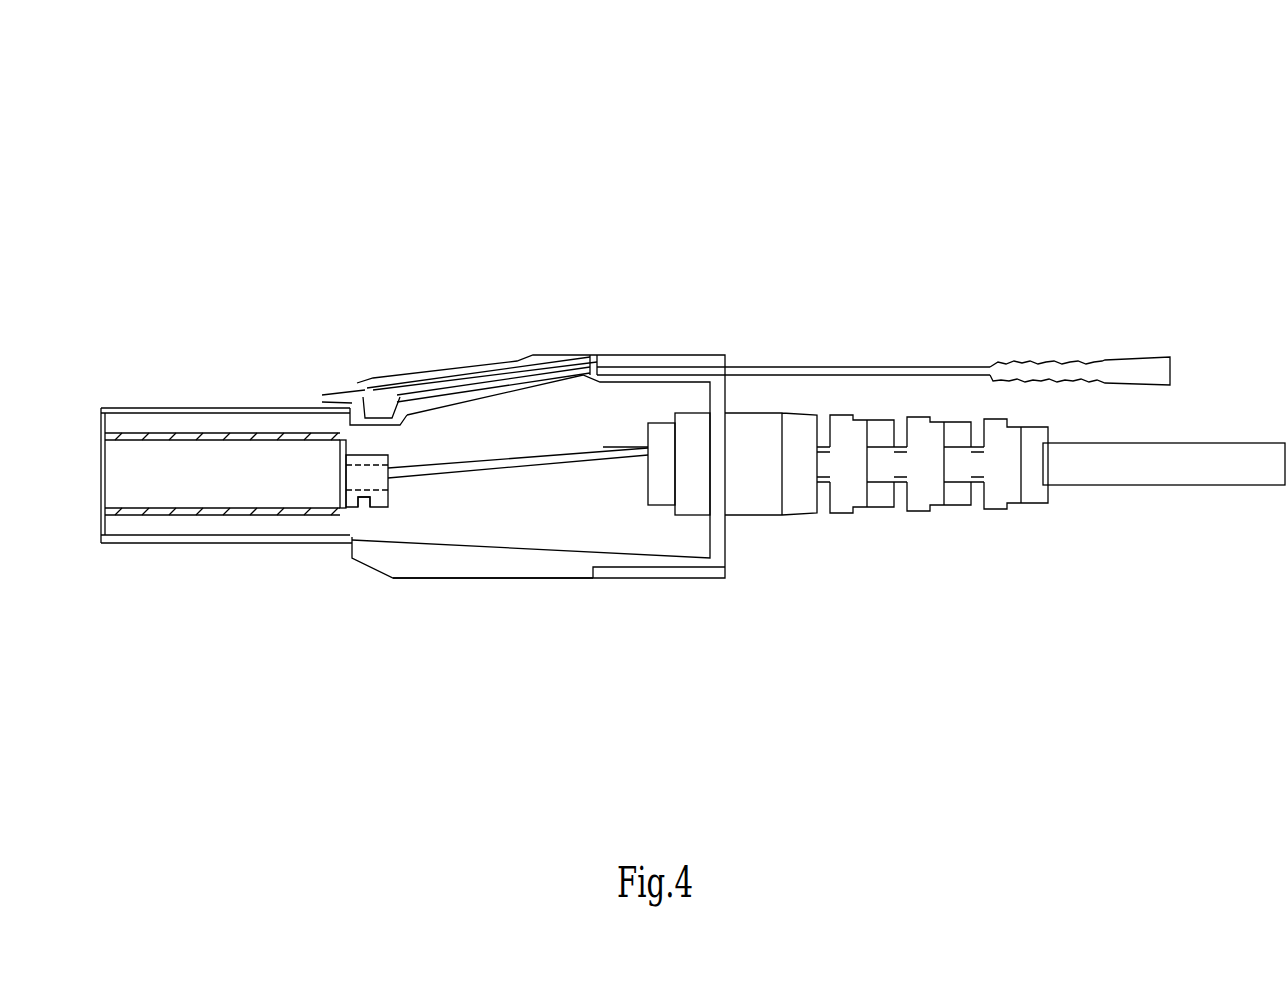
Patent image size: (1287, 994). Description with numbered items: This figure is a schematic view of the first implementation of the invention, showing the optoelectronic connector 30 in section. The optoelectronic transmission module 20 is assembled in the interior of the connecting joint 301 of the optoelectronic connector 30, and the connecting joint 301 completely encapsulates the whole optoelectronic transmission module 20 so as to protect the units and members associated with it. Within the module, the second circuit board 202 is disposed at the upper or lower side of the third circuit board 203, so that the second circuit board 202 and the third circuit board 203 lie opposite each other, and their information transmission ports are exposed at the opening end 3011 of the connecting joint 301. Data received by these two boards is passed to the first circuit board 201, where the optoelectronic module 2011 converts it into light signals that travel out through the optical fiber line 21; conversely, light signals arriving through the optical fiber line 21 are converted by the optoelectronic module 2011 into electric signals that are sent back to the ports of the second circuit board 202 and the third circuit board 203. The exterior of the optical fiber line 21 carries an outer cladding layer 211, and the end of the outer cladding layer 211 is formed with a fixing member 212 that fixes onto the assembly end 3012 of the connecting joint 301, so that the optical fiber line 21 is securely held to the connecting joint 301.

The optoelectronic transmission module 20 is at (378, 698).
The first circuit board 201 is at (330, 512).
The optoelectronic module 2011 is at (377, 480).
The second circuit board 202 is at (108, 458).
The third circuit board 203 is at (215, 511).
The optical fiber line 21 is at (473, 455).
The outer cladding layer 211 is at (1242, 467).
The fixing member 212 is at (748, 498).
The optoelectronic connector 30 is at (718, 235).
The connecting joint 301 is at (572, 387).
The opening end 3011 is at (148, 423).
The assembly end 3012 is at (502, 560).